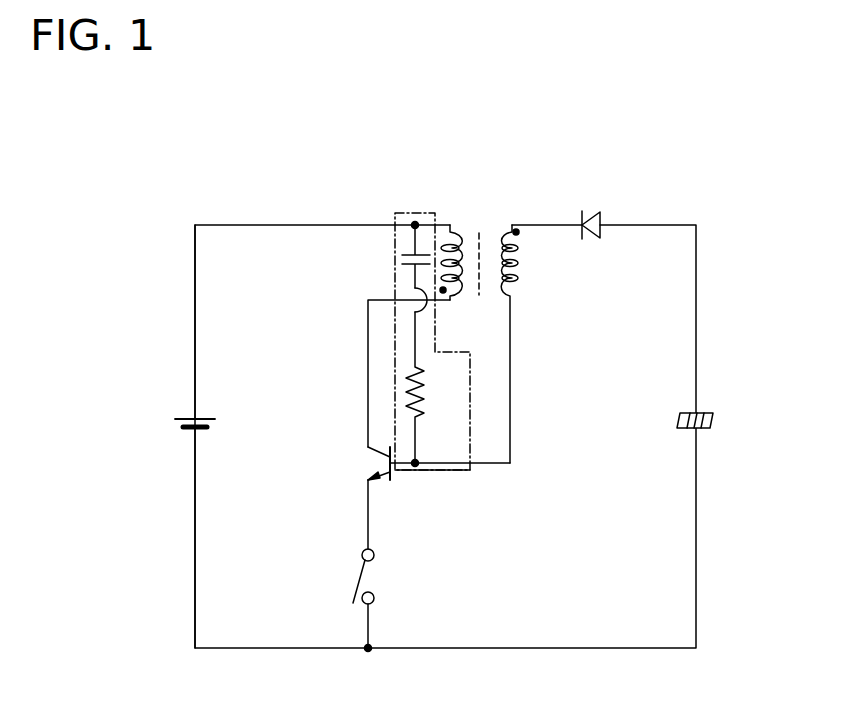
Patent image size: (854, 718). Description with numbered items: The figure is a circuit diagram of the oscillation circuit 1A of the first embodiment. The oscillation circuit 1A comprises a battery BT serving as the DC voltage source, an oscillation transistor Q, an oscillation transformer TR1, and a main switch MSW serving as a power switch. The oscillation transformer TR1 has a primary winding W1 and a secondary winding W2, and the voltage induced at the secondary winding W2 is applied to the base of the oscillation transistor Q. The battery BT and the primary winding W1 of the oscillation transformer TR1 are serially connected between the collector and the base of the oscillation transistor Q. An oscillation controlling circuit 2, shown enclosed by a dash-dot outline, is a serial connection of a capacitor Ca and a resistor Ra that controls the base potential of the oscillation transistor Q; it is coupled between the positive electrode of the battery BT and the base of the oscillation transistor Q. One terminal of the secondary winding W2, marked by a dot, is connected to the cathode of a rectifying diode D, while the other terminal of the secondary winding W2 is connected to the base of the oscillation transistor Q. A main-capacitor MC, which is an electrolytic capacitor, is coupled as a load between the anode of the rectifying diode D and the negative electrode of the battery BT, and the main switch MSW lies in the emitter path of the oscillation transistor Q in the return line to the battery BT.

The oscillation circuit 1A is at (303, 212).
The oscillation controlling circuit 2 is at (448, 473).
The battery BT is at (176, 424).
The main-capacitor MC is at (694, 415).
The rectifying diode D is at (591, 237).
The capacitor Ca is at (394, 267).
The resistor Ra is at (432, 389).
The oscillation transformer TR1 is at (499, 312).
The primary winding W1 is at (460, 280).
The secondary winding W2 is at (529, 344).
The oscillation transistor Q is at (366, 498).
The main switch MSW is at (381, 581).